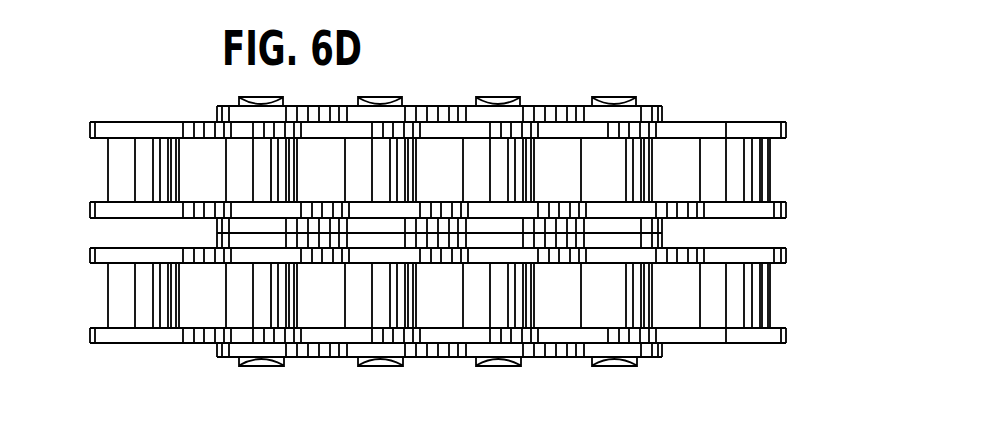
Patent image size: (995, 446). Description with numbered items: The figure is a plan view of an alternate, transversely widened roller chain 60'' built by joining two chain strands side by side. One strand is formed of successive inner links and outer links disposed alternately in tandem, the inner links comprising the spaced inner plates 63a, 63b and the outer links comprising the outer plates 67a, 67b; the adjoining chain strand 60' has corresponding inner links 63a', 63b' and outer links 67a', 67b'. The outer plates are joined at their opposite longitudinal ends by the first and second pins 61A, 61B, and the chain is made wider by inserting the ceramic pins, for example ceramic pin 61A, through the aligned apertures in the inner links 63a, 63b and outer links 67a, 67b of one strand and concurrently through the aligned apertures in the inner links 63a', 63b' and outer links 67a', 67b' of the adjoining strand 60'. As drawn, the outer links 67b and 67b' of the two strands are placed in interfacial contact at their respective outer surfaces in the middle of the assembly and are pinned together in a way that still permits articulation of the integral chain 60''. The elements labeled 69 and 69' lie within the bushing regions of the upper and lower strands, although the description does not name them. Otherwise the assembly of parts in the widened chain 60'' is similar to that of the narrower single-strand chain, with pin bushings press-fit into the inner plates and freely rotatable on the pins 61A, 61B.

The adjoining chain strand 60' is at (420, 233).
The roller chain 60'' is at (439, 120).
The first pin 61A is at (636, 99).
The second pin 61B is at (506, 97).
The inner plate 63a is at (533, 102).
The inner link of adjoining chain strand 63a' is at (519, 361).
The inner plate 63b is at (567, 231).
The inner link of adjoining chain strand 63b' is at (572, 256).
The outer plate 67a is at (439, 83).
The outer link of adjoining chain strand 67a' is at (439, 376).
The outer plate 67b is at (472, 194).
The outer link of adjoining chain strand 67b' is at (472, 271).
The bushing 69 is at (616, 170).
The bushing 69' is at (616, 295).